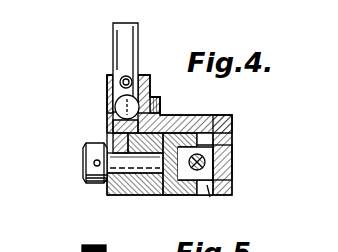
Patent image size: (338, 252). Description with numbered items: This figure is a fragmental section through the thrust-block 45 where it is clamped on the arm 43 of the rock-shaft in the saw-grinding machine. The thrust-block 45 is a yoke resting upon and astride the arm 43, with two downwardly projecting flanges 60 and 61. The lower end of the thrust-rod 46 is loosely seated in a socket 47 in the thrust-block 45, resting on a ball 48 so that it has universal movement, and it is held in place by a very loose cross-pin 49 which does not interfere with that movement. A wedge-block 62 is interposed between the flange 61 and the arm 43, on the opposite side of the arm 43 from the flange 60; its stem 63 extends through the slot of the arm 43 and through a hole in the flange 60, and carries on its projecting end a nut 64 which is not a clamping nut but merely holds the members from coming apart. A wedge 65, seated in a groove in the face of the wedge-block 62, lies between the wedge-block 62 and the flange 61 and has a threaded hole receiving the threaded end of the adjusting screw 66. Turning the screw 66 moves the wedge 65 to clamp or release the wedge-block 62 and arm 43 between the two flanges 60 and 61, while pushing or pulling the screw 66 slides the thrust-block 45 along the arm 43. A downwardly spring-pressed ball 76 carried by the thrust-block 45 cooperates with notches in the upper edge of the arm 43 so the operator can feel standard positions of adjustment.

In FIG. 4, the arm 43 is at (143, 195).
In FIG. 4, the thrust-block 45 is at (107, 126).
In FIG. 5, the thrust-block 45 is at (113, 242).
In FIG. 4, the thrust-rod 46 is at (118, 50).
In FIG. 4, the socket 47 is at (105, 80).
In FIG. 4, the ball 48 is at (121, 107).
In FIG. 4, the cross-pin 49 is at (131, 77).
In FIG. 4, the flange 60 is at (107, 193).
In FIG. 4, the flange 61 is at (233, 184).
In FIG. 4, the wedge-block 62 is at (185, 196).
In FIG. 4, the stem 63 is at (124, 154).
In FIG. 4, the nut 64 is at (85, 178).
In FIG. 5, the nut 64 is at (44, 243).
In FIG. 4, the wedge 65 is at (214, 153).
In FIG. 4, the adjusting screw 66 is at (210, 197).
In FIG. 4, the ball 76 is at (165, 108).